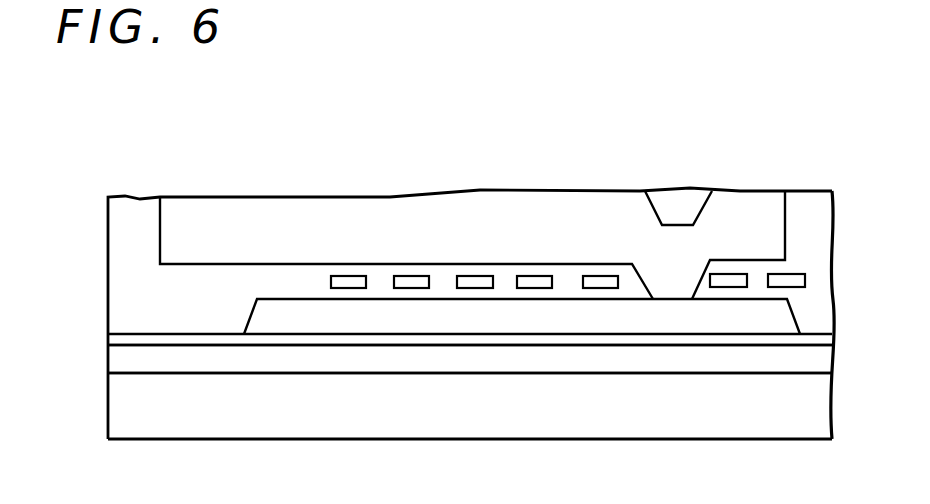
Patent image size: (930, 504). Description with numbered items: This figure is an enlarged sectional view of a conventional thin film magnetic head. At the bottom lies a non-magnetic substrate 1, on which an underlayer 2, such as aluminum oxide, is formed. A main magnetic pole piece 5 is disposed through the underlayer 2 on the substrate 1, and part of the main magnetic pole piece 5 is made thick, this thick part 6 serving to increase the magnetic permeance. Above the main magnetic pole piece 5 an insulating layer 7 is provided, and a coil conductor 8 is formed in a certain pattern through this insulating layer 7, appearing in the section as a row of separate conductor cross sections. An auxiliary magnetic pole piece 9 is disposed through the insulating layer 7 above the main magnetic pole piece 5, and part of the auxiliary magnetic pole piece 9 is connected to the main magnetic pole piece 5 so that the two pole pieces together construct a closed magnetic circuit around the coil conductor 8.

The non-magnetic substrate 1 is at (132, 422).
The underlayer 2 is at (434, 357).
The main magnetic pole piece 5 is at (222, 338).
The thick part of the main magnetic pole piece 6 is at (667, 313).
The insulating layer 7 is at (257, 278).
The coil conductor 8 is at (418, 275).
The auxiliary magnetic pole piece 9 is at (730, 207).